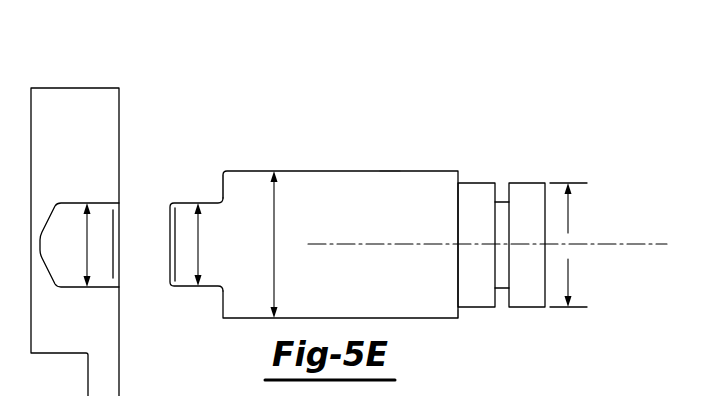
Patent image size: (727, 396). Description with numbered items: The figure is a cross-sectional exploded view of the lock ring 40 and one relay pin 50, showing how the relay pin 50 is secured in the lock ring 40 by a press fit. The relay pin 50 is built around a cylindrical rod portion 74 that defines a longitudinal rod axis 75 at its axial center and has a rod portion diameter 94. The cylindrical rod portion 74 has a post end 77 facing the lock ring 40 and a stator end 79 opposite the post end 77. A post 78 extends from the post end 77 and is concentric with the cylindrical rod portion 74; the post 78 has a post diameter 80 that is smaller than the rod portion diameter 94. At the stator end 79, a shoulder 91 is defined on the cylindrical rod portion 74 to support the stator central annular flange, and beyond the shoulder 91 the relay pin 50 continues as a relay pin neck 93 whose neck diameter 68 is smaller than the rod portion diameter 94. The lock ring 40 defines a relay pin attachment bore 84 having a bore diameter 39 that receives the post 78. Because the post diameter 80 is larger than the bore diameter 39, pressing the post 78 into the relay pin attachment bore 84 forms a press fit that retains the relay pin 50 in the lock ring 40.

The lock ring 40 is at (77, 88).
The bore diameter 39 is at (87, 245).
The relay pin attachment bore 84 is at (106, 284).
The relay pin 50 is at (329, 170).
The post end 77 is at (222, 186).
The post 78 is at (187, 281).
The post diameter 80 is at (198, 247).
The rod portion diameter 94 is at (274, 266).
The cylindrical rod portion 74 is at (388, 188).
The stator end 79 is at (473, 172).
The relay pin neck 93 is at (526, 217).
The neck diameter 68 is at (568, 245).
The longitudinal rod axis 75 is at (641, 244).
The shoulder 91 is at (460, 312).